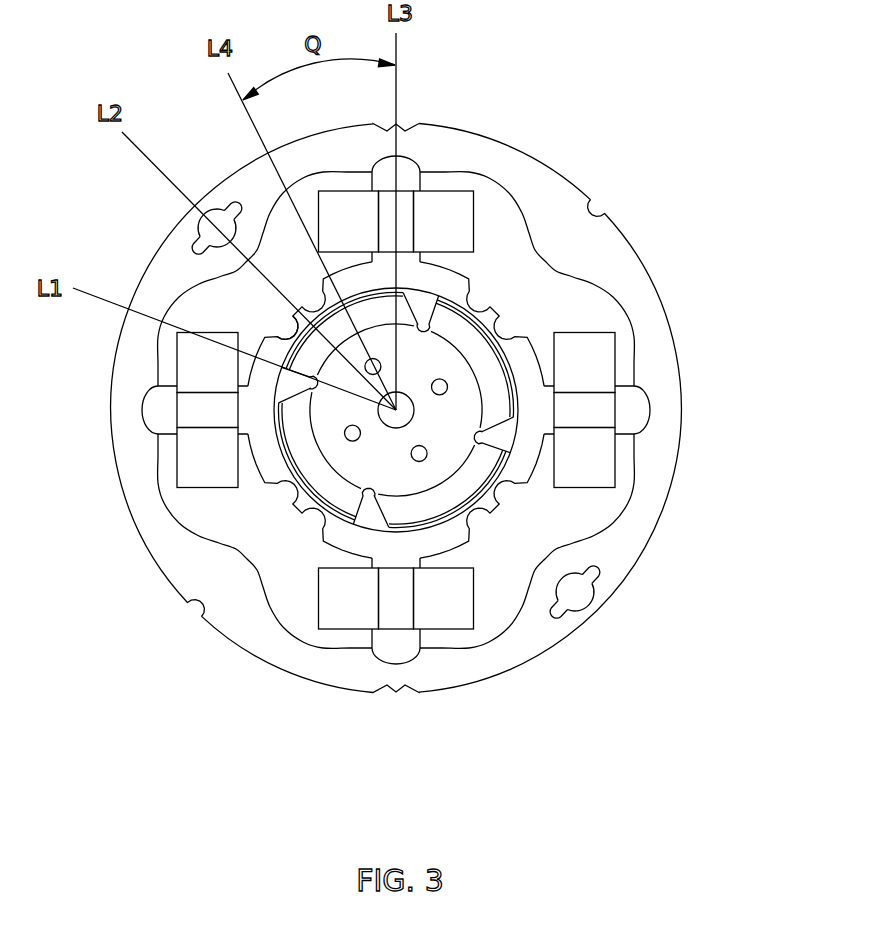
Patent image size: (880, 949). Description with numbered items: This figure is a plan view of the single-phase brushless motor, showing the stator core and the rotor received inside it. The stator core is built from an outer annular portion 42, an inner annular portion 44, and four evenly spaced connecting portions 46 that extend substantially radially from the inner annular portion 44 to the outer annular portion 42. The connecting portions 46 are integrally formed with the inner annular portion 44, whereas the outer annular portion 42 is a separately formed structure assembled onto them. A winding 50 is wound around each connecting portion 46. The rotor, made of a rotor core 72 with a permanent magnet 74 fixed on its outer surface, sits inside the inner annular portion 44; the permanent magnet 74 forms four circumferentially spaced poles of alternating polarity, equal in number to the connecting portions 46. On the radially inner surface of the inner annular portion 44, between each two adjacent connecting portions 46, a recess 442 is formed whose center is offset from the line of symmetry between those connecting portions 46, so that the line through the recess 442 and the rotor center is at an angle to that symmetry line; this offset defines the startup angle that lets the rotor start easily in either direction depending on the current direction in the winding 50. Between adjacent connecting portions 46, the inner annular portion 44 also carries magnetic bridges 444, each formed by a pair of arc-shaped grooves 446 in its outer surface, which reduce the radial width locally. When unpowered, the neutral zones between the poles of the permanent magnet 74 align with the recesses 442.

The outer annular portion 42 is at (522, 173).
The inner annular portion 44 is at (391, 410).
The recess 442 is at (391, 365).
The magnetic bridge 444 is at (293, 308).
The groove 446 is at (292, 327).
The connecting portion 46 is at (625, 418).
The winding 50 is at (345, 603).
The rotor core 72 is at (338, 450).
The permanent magnet 74 is at (332, 488).